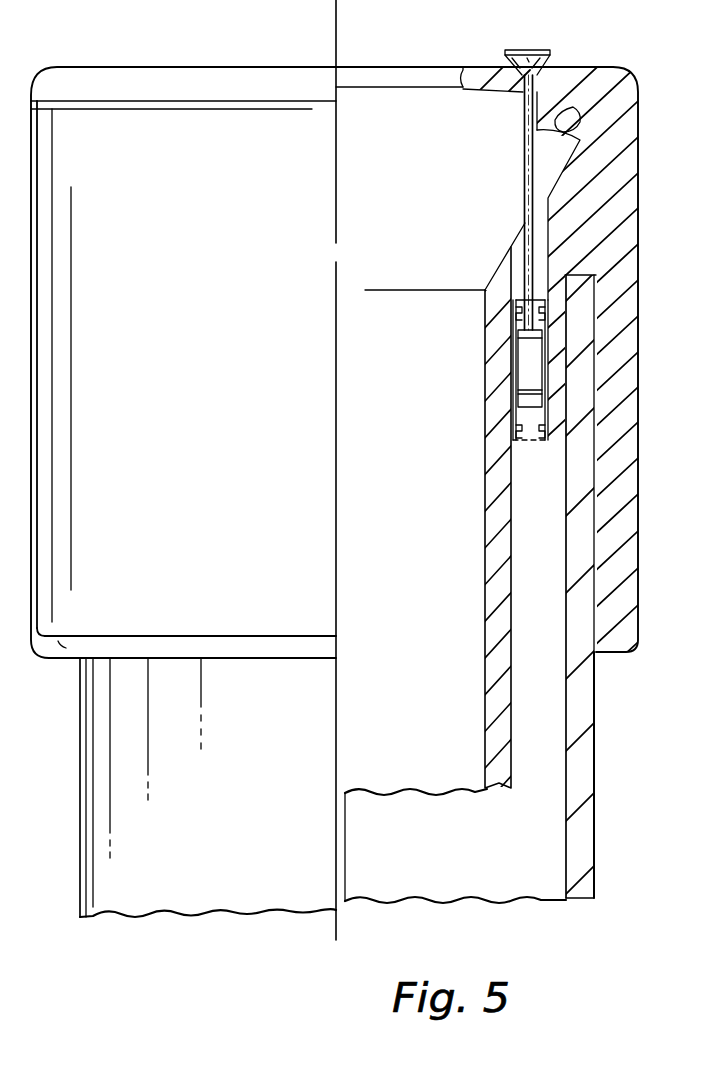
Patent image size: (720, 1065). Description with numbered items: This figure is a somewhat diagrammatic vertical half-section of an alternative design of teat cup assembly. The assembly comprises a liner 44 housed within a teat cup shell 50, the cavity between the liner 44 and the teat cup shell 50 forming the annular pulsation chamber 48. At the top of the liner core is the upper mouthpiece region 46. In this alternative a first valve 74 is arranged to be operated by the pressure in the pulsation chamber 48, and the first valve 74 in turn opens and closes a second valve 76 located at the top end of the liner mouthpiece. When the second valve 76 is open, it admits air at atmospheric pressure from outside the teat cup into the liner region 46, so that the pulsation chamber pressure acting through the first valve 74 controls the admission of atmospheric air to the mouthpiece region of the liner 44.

The liner 44 is at (503, 777).
The upper mouthpiece region 46 is at (573, 107).
The annular pulsation chamber 48 is at (540, 703).
The teat cup shell 50 is at (122, 708).
The first valve 74 is at (530, 375).
The second valve 76 is at (532, 52).